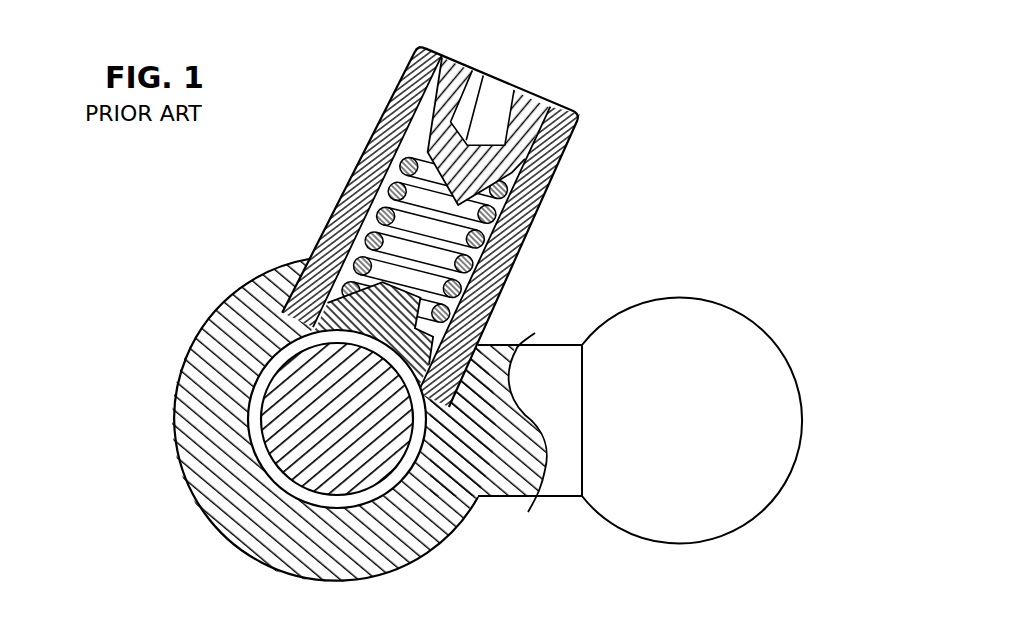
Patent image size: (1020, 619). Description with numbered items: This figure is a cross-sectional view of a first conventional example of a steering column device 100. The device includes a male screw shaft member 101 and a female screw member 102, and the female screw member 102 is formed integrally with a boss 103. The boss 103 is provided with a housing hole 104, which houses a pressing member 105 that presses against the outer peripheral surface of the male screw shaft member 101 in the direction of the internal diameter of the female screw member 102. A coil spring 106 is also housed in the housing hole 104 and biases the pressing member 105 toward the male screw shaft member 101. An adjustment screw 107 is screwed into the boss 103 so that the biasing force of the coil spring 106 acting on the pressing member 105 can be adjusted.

The steering column device 100 is at (440, 291).
The male screw shaft member 101 is at (282, 417).
The female screw member 102 is at (222, 517).
The boss 103 is at (525, 242).
The housing hole 104 is at (544, 104).
The pressing member 105 is at (337, 318).
The coil spring 106 is at (378, 200).
The adjustment screw 107 is at (443, 113).